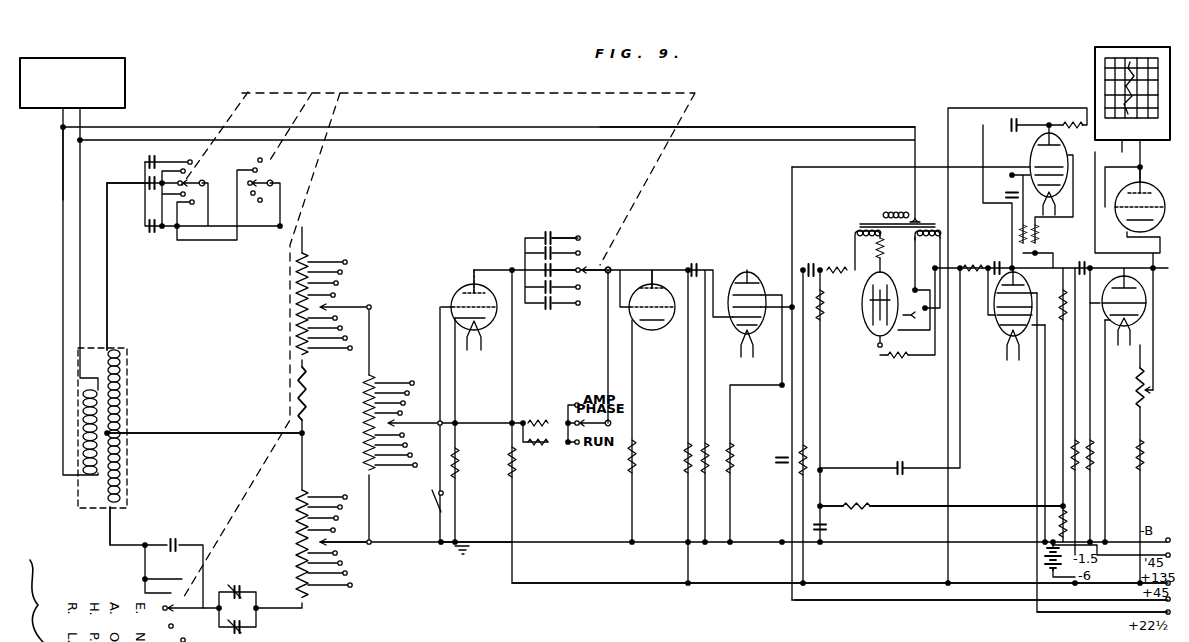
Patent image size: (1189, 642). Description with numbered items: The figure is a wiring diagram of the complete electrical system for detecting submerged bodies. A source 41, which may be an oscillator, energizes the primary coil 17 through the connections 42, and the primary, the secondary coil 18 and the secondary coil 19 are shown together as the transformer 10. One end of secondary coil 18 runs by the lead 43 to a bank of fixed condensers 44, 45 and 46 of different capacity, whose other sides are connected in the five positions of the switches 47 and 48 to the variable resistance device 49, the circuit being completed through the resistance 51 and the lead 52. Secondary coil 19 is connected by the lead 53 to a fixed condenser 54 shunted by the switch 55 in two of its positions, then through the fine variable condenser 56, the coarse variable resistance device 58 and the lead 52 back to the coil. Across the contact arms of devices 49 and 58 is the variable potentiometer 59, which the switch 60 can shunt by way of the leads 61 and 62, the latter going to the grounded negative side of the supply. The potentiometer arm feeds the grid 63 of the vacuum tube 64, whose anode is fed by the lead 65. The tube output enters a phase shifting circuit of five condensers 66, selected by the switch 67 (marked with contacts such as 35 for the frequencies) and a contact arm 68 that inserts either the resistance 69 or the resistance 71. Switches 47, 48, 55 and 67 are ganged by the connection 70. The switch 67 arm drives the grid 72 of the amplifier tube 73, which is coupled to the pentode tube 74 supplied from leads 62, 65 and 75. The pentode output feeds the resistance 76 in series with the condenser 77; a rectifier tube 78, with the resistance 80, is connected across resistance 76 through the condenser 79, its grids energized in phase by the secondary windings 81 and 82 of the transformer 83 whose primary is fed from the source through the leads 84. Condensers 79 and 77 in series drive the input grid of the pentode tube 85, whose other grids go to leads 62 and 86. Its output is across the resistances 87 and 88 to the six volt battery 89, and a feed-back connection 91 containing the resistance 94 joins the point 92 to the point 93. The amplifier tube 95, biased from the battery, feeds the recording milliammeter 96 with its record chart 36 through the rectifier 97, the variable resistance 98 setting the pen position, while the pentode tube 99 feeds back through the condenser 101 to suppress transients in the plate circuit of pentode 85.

The source 41 is at (125, 85).
The connections 42 is at (80, 283).
The lead 43 is at (107, 252).
The fixed condenser 44 is at (150, 162).
The fixed condenser 45 is at (145, 183).
The fixed condenser 46 is at (151, 238).
The switch 47 is at (208, 175).
The switch 48 is at (272, 178).
The transformer 10 is at (137, 345).
The primary coil 17 is at (80, 435).
The secondary coil 18 is at (120, 380).
The secondary coil 19 is at (118, 452).
The lead 52 is at (216, 432).
The lead 53 is at (115, 518).
The fixed condenser 54 is at (178, 544).
The switch 55 is at (182, 616).
The variable condenser 56 is at (238, 587).
The variable resistance device 49 is at (331, 291).
The resistance 51 is at (306, 396).
The variable resistance device 58 is at (342, 540).
The variable potentiometer 59 is at (400, 423).
The switch 60 is at (432, 498).
The lead 61 is at (440, 450).
The lead 62 is at (408, 544).
The grid 63 is at (459, 299).
The vacuum tube 64 is at (472, 285).
The condensers 66 is at (552, 238).
The frequency contact 35 is at (580, 238).
The switch 67 is at (618, 264).
The resistance 69 is at (553, 418).
The resistance 71 is at (550, 448).
The contact arm 68 is at (612, 440).
The lead 65 is at (598, 583).
The grid 72 is at (635, 294).
The amplifier tube 73 is at (652, 272).
The pentode tube 74 is at (747, 272).
The resistance 80 is at (848, 273).
The resistance 76 is at (835, 313).
The rectifier tube 78 is at (872, 336).
The secondary winding 81 is at (854, 235).
The secondary winding 82 is at (933, 241).
The transformer 83 is at (863, 219).
The condenser 79 is at (912, 463).
The point 93 is at (822, 506).
The resistance 94 is at (854, 506).
The feed-back connection 91 is at (929, 506).
The condenser 77 is at (826, 530).
The lead 75 is at (880, 602).
The leads 84 is at (818, 127).
The connection 70 is at (480, 95).
The condenser 101 is at (1012, 125).
The pentode tube 99 is at (1030, 146).
The recording milliammeter 96 is at (1095, 76).
The record chart 36 is at (1110, 97).
The rectifier 97 is at (1145, 182).
The pentode tube 85 is at (996, 321).
The resistance 87 is at (1062, 299).
The amplifier tube 95 is at (1111, 340).
The variable resistance 98 is at (1140, 400).
The point 92 is at (1062, 504).
The resistance 88 is at (1061, 522).
The battery 89 is at (1041, 568).
The lead 86 is at (1078, 612).